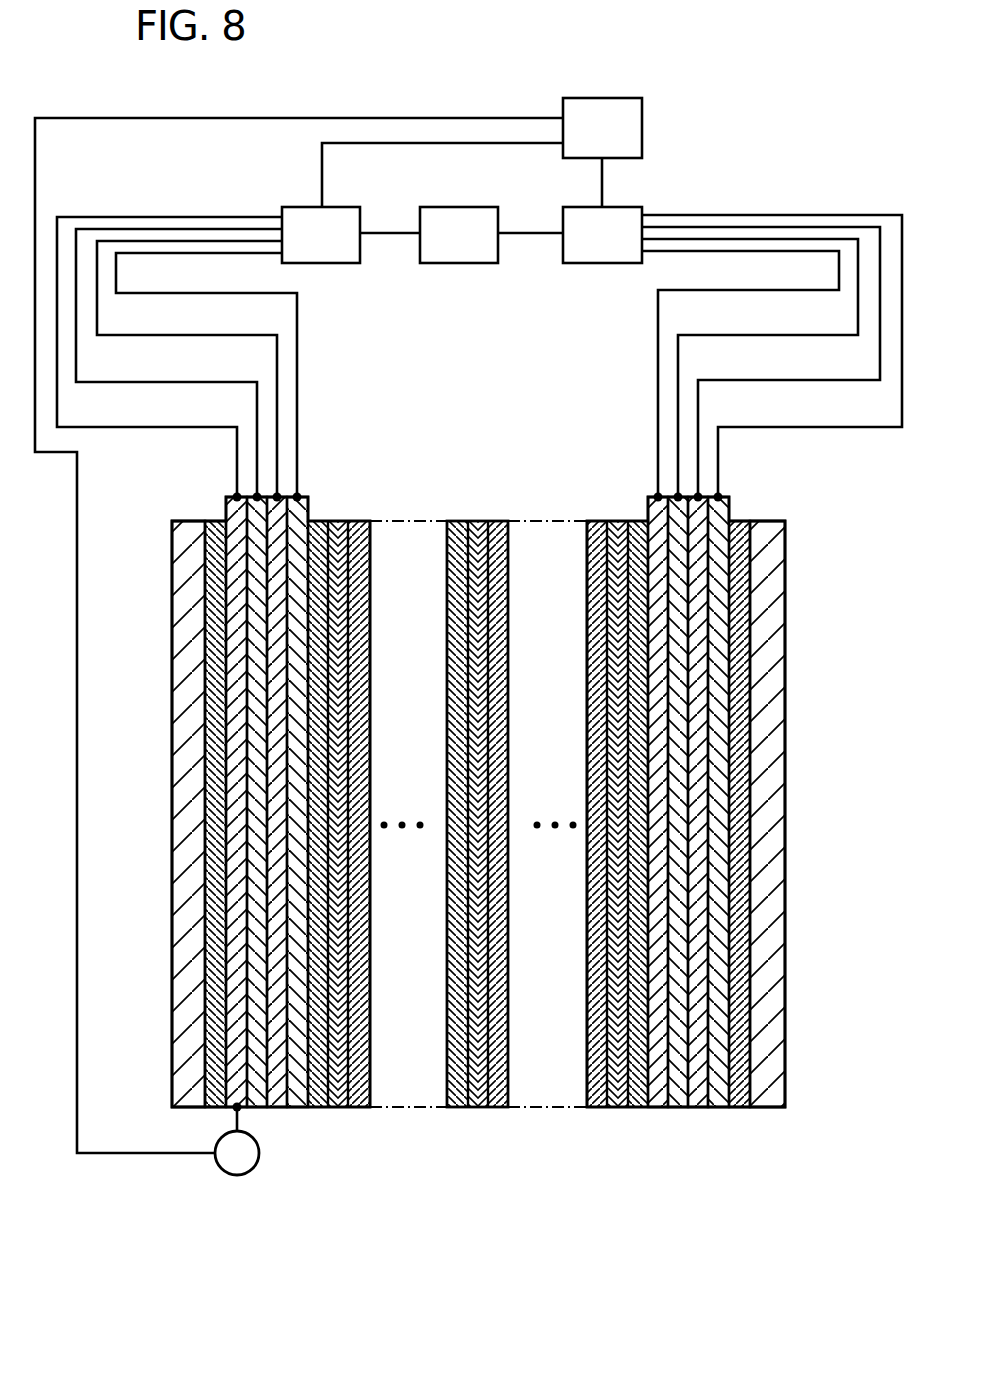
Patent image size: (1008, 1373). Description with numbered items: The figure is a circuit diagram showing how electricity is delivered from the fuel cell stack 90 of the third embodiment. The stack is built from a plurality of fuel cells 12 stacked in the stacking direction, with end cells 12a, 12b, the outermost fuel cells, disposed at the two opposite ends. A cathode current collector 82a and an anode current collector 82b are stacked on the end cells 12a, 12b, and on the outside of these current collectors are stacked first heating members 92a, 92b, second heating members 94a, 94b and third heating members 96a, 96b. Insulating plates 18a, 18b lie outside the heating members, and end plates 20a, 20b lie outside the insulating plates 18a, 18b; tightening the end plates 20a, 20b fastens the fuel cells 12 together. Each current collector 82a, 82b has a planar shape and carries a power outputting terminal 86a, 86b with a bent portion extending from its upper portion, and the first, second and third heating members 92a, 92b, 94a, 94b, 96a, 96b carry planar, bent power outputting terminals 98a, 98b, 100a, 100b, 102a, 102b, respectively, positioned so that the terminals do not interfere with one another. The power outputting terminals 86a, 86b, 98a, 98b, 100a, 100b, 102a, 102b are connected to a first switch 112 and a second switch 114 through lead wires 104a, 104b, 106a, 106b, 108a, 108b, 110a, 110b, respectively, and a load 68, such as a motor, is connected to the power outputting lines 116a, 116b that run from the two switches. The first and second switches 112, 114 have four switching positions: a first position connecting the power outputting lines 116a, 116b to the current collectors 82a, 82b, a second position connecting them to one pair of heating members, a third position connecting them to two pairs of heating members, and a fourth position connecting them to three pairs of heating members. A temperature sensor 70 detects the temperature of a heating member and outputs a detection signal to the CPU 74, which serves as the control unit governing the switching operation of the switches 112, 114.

The fuel cell stack 90 is at (292, 49).
The CPU 74 is at (627, 98).
The load 68 is at (483, 206).
The first switch 112 is at (327, 267).
The second switch 114 is at (599, 267).
The power outputting line 116a is at (397, 233).
The power outputting line 116b is at (532, 233).
The lead wire 104a is at (167, 293).
The lead wire 106a is at (167, 335).
The lead wire 108a is at (167, 382).
The lead wire 110a is at (122, 427).
The lead wire 104b is at (791, 290).
The lead wire 106b is at (791, 335).
The lead wire 108b is at (791, 380).
The lead wire 110b is at (844, 427).
The fuel cell 12 is at (490, 514).
The end cell 12a is at (323, 1110).
The end cell 12b is at (632, 1110).
The end plate 20a is at (169, 997).
The end plate 20b is at (788, 997).
The insulating plate 18a is at (205, 1067).
The insulating plate 18b is at (750, 1067).
The power outputting terminal 86a is at (308, 506).
The power outputting terminal 86b is at (648, 506).
The power outputting terminal 98a is at (279, 494).
The power outputting terminal 98b is at (676, 494).
The power outputting terminal 100a is at (255, 494).
The power outputting terminal 100b is at (700, 494).
The power outputting terminal 102a is at (226, 506).
The power outputting terminal 102b is at (729, 506).
The cathode current collector 82a is at (304, 1110).
The anode current collector 82b is at (657, 1110).
The first heating member 92a is at (281, 1110).
The first heating member 92b is at (681, 1110).
The second heating member 94a is at (258, 1110).
The second heating member 94b is at (698, 1110).
The third heating member 96a is at (237, 1067).
The third heating member 96b is at (720, 1068).
The temperature sensor 70 is at (237, 1177).